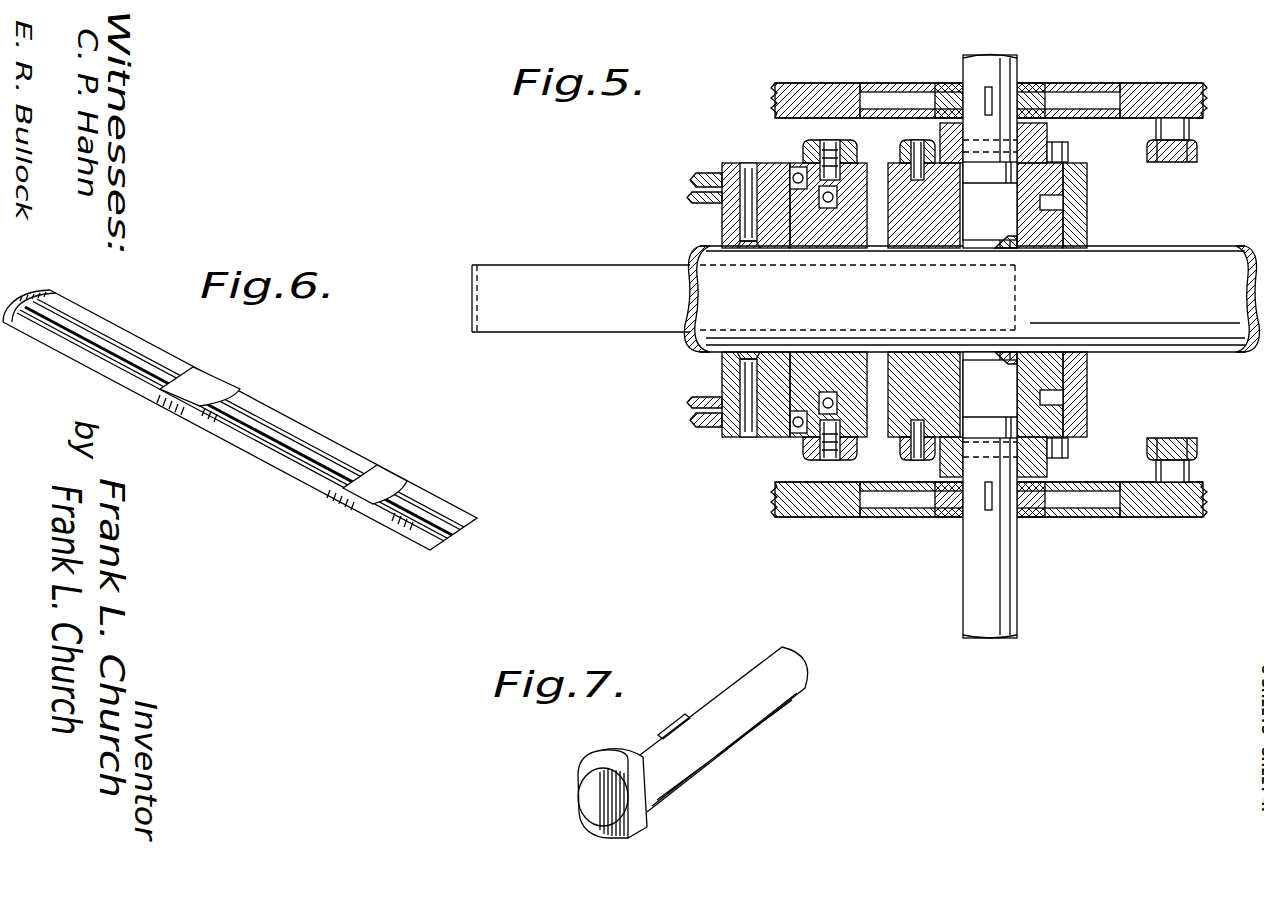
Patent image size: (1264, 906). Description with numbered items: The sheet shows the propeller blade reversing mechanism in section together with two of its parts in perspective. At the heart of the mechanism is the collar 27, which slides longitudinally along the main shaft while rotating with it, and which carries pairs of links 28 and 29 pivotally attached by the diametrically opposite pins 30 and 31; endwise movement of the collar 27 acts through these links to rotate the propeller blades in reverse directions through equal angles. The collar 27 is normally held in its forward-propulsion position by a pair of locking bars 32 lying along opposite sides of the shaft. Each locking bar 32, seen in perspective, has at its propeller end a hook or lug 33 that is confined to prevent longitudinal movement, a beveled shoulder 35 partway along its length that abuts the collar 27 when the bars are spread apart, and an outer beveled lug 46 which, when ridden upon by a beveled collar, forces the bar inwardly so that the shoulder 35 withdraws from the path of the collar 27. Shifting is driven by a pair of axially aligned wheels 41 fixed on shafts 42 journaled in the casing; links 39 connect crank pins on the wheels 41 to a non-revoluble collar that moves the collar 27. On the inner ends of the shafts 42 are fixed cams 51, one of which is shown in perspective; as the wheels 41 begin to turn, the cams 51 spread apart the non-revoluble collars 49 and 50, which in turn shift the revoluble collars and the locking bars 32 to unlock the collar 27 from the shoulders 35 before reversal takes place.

In FIG. 5, the collar 27 is at (722, 432).
In FIG. 5, the links 28 is at (674, 403).
In FIG. 5, the links 29 is at (690, 197).
In FIG. 5, the pin 30 is at (746, 437).
In FIG. 5, the pin 31 is at (748, 165).
In FIG. 6, the locking bar 32 is at (139, 347).
In FIG. 6, the hook or lug 33 is at (60, 288).
In FIG. 6, the beveled shoulder 35 is at (231, 388).
In FIG. 5, the link 39 is at (1172, 163).
In FIG. 5, the wheel 41 is at (1135, 524).
In FIG. 5, the shaft 42 is at (960, 63).
In FIG. 7, the shaft 42 is at (800, 645).
In FIG. 6, the lug 46 is at (386, 468).
In FIG. 5, the non-revoluble collar 49 is at (908, 163).
In FIG. 5, the non-revoluble collar 50 is at (1085, 296).
In FIG. 5, the cam 51 is at (988, 180).
In FIG. 7, the cam 51 is at (627, 837).